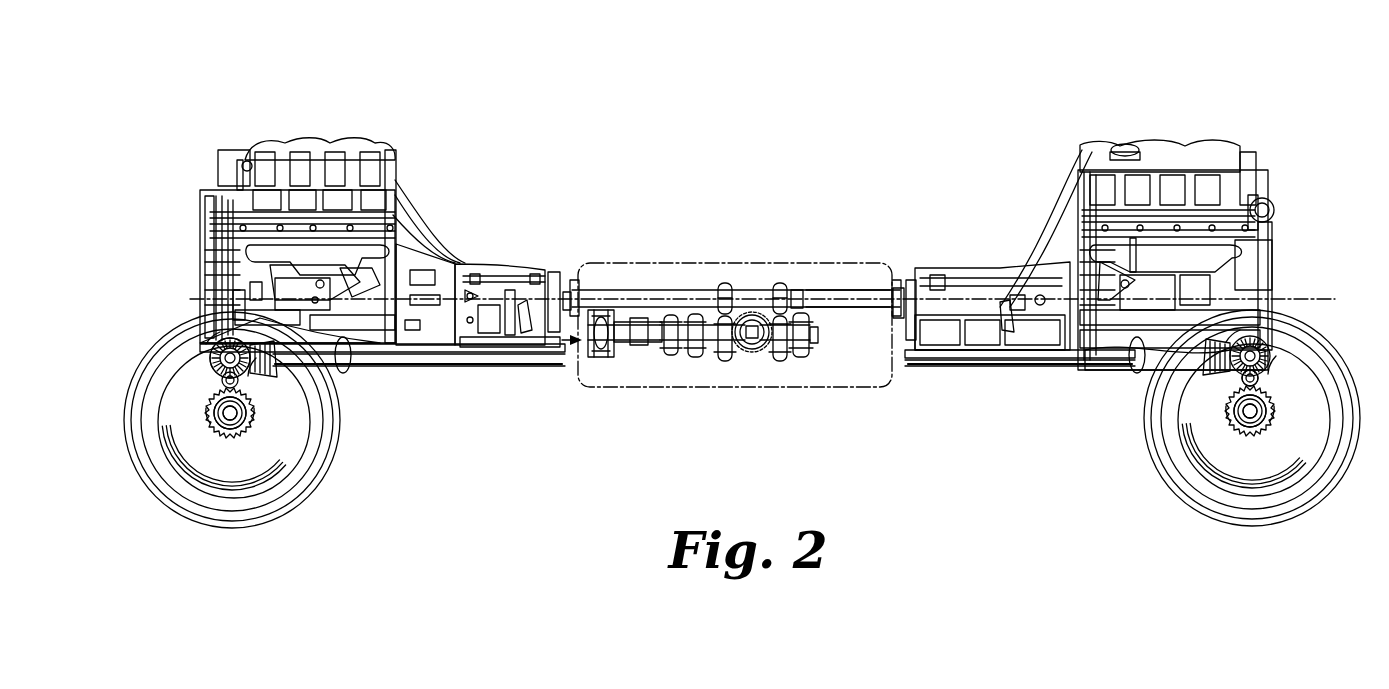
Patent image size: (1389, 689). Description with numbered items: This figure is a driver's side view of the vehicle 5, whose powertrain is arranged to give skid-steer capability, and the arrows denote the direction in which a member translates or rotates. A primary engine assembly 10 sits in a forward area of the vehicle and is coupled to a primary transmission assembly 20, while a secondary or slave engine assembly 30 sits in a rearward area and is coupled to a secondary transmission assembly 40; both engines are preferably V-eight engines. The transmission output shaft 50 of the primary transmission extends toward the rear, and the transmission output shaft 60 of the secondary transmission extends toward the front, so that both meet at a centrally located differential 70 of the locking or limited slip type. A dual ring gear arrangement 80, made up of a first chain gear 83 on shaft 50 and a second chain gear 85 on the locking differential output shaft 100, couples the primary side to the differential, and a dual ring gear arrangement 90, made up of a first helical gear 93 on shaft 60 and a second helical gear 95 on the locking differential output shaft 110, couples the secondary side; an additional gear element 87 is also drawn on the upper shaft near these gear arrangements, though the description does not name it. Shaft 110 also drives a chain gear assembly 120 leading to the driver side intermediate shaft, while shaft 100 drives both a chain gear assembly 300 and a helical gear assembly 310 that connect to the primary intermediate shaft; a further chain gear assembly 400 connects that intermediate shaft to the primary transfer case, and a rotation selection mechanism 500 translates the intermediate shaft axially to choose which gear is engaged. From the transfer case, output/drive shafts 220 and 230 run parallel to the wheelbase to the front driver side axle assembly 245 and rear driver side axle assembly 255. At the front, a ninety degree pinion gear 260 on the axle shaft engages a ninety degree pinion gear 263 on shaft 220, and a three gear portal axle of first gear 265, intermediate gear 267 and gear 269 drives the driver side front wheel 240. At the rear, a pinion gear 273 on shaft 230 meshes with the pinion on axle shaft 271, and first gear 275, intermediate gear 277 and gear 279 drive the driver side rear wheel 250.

The vehicle 5 is at (972, 64).
The primary engine assembly 10 is at (384, 136).
The primary transmission assembly 20 is at (483, 263).
The secondary engine assembly 30 is at (1166, 140).
The secondary transmission assembly 40 is at (975, 266).
The transmission output shaft 50 is at (645, 308).
The transmission output shaft 60 is at (858, 266).
The differential 70 is at (762, 352).
The dual ring gear arrangement 80 is at (691, 296).
The first chain gear 83 is at (718, 283).
The second chain gear 85 is at (722, 362).
The third gear 87 is at (770, 290).
The dual ring gear arrangement 90 is at (818, 300).
The first helical gear 93 is at (796, 306).
The second helical gear 95 is at (780, 362).
The locking differential output shaft 100 is at (695, 356).
The locking differential output shaft 110 is at (806, 358).
The chain gear assembly 120 is at (813, 347).
The transfer case output/drive shaft 220 is at (442, 372).
The transfer case output/drive shaft 230 is at (1000, 372).
The driver side front wheel 240 is at (250, 525).
The front driver side axle assembly 245 is at (193, 388).
The driver side rear wheel 250 is at (1262, 525).
The rear driver side axle assembly 255 is at (1214, 404).
The 90 degree pinion gear 260 is at (228, 340).
The 90 degree pinion gear 263 is at (280, 366).
The first gear 265 is at (210, 356).
The intermediate gear 267 is at (250, 397).
The gear 269 is at (243, 432).
The axle shaft 271 is at (1252, 336).
The 90 degree pinion gear 273 is at (1215, 355).
The first gear 275 is at (1268, 360).
The intermediate gear 277 is at (1240, 388).
The gear 279 is at (1250, 420).
The chain gear assembly 300 is at (695, 359).
The helical gear assembly 310 is at (670, 358).
The chain gear assembly 400 is at (562, 343).
The rotation selection mechanism 500 is at (704, 309).